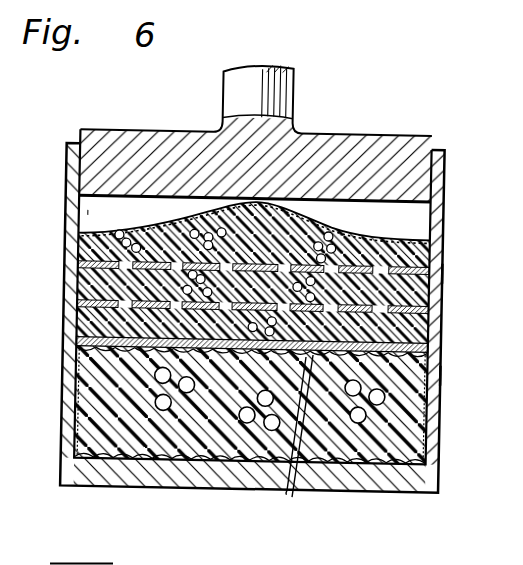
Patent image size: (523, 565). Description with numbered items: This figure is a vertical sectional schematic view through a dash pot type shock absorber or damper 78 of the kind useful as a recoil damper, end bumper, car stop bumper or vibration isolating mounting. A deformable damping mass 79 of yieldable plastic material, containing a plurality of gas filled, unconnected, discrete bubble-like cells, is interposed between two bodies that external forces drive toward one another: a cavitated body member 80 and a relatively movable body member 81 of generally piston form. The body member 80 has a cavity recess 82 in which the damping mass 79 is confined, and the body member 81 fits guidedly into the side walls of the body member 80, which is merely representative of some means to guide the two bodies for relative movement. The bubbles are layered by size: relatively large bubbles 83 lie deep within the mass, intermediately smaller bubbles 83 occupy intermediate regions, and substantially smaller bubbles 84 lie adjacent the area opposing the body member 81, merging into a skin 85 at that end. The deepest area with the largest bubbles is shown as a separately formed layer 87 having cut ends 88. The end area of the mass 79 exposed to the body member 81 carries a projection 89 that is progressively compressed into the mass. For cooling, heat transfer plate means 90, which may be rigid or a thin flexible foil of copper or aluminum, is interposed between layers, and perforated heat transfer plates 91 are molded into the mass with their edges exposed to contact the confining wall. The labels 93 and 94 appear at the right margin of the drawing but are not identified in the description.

The shock absorber or damper 78 is at (430, 129).
The deformable damping mass 79 is at (405, 230).
The cavitated body member 80 is at (393, 481).
The relatively movable body member 81 is at (333, 141).
The cavity recess 82 is at (86, 213).
The large bubbles 83 is at (78, 293).
The smaller size bubbles 84 is at (141, 224).
The skin 85 is at (310, 209).
The separately formed layer 87 is at (406, 447).
The cut ends 88 is at (295, 440).
The projection 89 is at (195, 209).
The heat transfer plate means 90 is at (424, 345).
The perforated heat transfer plates 91 is at (402, 305).
The side region 93 is at (482, 272).
The side region 94 is at (481, 374).